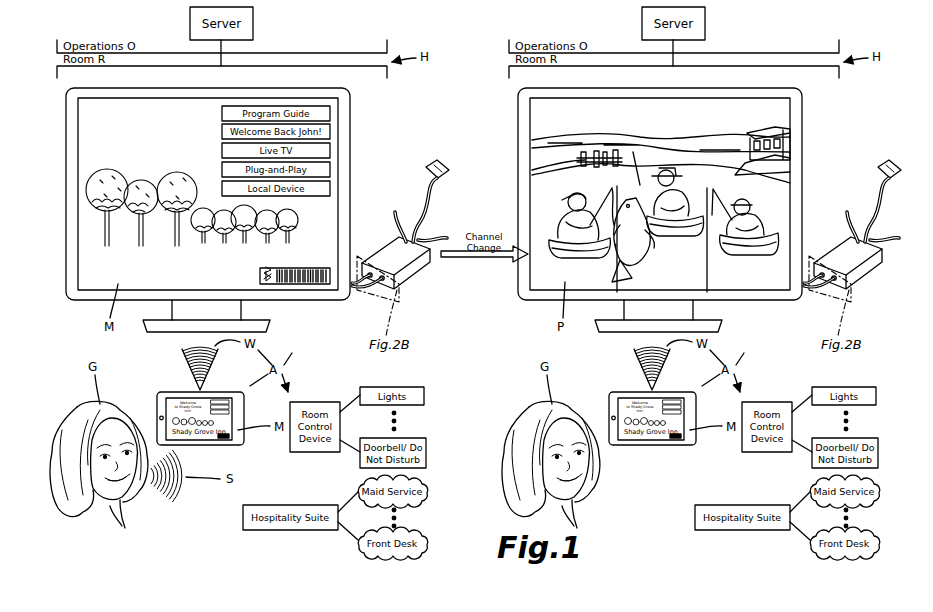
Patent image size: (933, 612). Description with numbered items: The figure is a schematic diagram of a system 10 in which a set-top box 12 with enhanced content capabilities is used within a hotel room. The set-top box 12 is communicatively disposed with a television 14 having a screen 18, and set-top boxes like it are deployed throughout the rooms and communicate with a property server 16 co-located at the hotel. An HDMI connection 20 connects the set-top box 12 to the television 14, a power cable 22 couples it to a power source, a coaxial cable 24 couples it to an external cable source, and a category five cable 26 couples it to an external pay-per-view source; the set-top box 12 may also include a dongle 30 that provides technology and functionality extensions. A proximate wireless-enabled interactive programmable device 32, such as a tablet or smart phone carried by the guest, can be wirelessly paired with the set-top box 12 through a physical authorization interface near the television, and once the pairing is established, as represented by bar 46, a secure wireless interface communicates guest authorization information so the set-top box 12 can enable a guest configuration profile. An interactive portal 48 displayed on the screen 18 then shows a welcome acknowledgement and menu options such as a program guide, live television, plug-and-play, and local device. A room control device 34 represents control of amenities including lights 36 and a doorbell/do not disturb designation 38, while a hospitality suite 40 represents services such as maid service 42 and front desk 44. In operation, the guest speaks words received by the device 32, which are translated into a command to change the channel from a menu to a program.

The system 10 is at (488, 209).
The set-top box 12 is at (623, 294).
The television 14 is at (462, 210).
The property server 16 is at (470, 36).
The screen 18 is at (434, 178).
The HDMI connection 20 is at (599, 298).
The power cable 22 is at (589, 303).
The coaxial cable 24 is at (631, 213).
The category five cable 26 is at (658, 219).
The dongle 30 is at (661, 180).
The proximate wireless-enabled interactive programmable device 32 is at (401, 415).
The room control device 34 is at (541, 408).
The lights 36 is at (638, 396).
The doorbell/do not disturb designation 38 is at (638, 453).
The hospitality suite 40 is at (492, 517).
The maid service 42 is at (540, 121).
The front desk 44 is at (545, 148).
The bar 46 is at (517, 308).
The interactive portal 48 is at (537, 146).